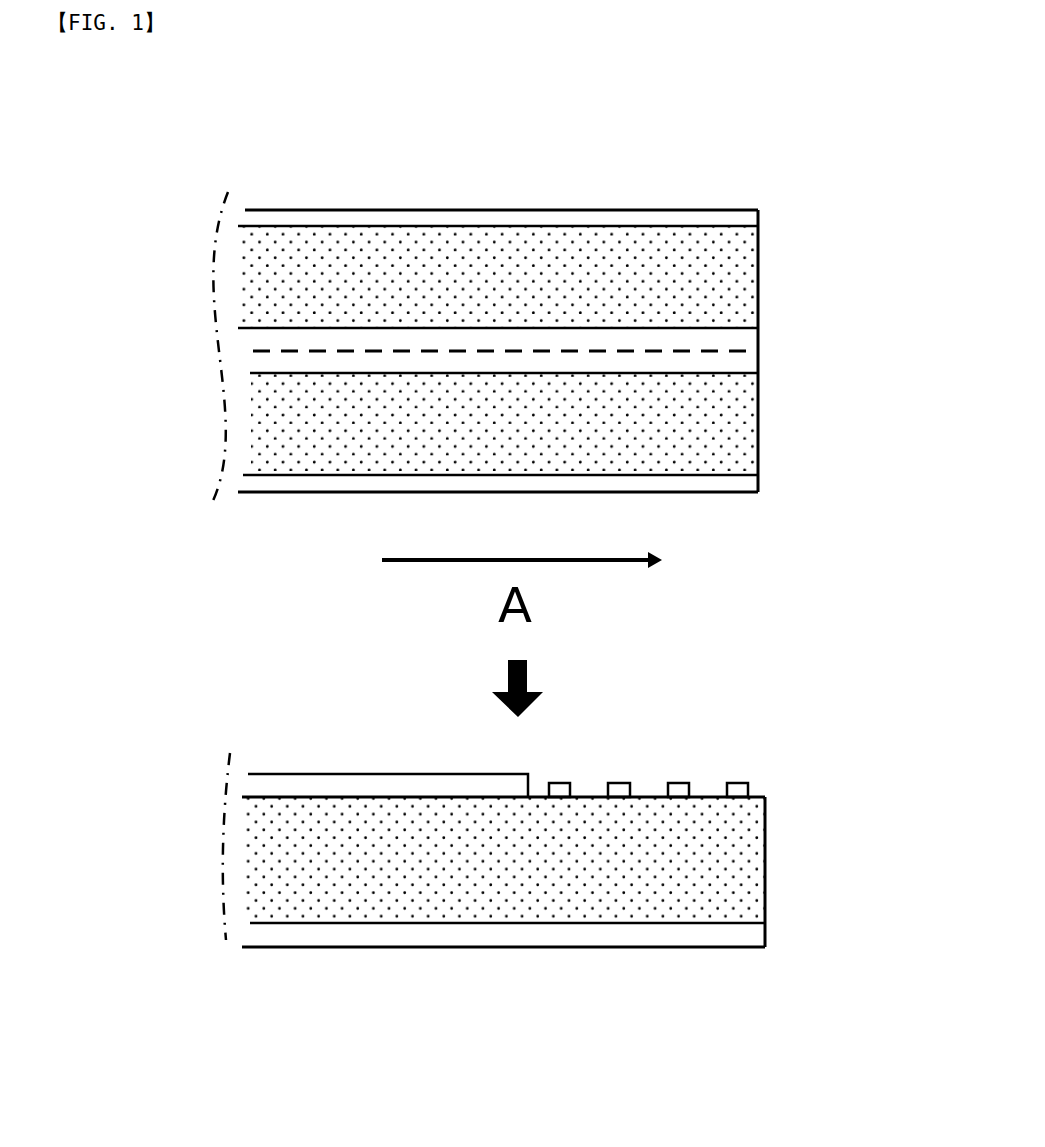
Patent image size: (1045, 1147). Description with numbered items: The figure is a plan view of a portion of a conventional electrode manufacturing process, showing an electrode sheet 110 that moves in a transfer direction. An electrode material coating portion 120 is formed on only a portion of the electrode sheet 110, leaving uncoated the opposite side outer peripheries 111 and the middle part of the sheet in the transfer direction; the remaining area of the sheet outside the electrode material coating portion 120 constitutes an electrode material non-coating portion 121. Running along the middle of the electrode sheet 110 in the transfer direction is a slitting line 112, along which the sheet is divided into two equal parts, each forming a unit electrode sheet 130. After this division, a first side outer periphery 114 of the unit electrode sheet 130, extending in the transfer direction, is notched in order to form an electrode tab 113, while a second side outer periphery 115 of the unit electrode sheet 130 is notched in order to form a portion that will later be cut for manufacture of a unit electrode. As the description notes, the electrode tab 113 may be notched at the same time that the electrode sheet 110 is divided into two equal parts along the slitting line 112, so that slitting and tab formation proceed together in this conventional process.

The electrode sheet 110 is at (307, 192).
The opposite side outer peripheries 111 is at (445, 210).
The slitting line 112 is at (728, 348).
The electrode tab 113 is at (740, 778).
The first side outer periphery 114 is at (326, 792).
The second side outer periphery 115 is at (777, 918).
The electrode material coating portion 120 is at (735, 270).
The electrode material non-coating portion 121 is at (540, 210).
The unit electrode sheet 130 is at (188, 358).